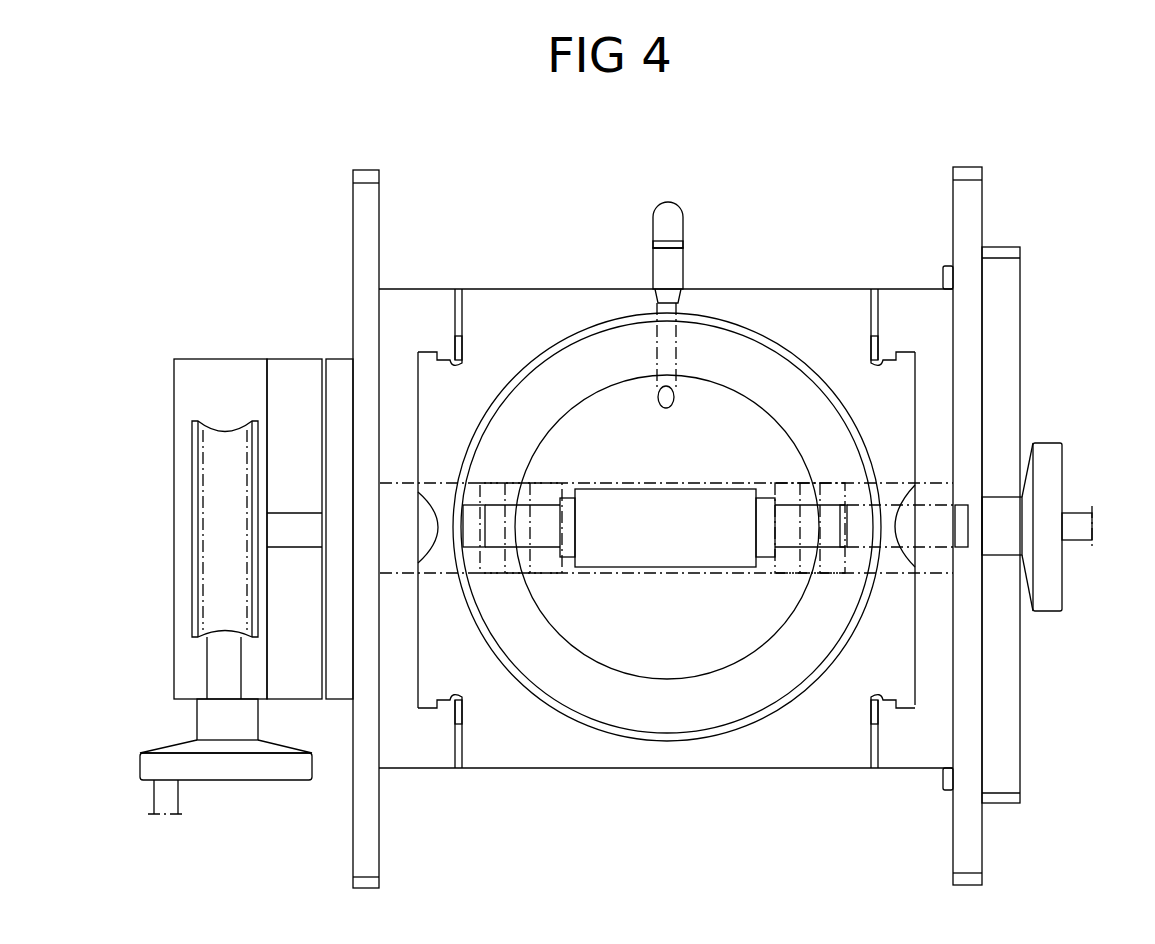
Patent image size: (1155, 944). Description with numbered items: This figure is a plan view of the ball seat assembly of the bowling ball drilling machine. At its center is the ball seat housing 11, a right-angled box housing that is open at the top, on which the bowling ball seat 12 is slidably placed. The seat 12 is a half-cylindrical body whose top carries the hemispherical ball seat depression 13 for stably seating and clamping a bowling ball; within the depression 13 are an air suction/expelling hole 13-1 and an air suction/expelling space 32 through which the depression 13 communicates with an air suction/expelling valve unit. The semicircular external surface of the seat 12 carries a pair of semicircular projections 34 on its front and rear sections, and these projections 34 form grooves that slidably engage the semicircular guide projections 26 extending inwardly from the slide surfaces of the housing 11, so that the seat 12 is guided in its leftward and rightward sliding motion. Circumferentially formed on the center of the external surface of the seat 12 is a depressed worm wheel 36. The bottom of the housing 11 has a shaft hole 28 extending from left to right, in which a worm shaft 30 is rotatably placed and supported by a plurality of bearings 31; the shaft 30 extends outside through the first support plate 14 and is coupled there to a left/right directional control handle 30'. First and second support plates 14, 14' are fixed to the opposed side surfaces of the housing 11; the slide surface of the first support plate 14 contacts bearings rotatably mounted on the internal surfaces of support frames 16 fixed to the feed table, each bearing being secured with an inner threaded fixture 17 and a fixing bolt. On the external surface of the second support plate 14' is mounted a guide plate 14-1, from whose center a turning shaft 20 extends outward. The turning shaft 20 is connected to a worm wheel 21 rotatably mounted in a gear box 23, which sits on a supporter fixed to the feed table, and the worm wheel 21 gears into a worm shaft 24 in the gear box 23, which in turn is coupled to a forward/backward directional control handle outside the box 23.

The first support plate 14 is at (1014, 504).
The second support plate 14' is at (408, 529).
The guide plate 14-1 is at (343, 375).
The support frame 16 is at (1010, 665).
The inner threaded fixture 17 is at (948, 270).
The ball seat housing 11 is at (897, 289).
The bowling ball seat 12 is at (795, 289).
The hemispherical ball seat depression 13 is at (620, 345).
The air suction/expelling hole 13-1 is at (670, 392).
The turning shaft 20 is at (285, 520).
The worm wheel 21 is at (215, 514).
The gear box 23 is at (197, 375).
The worm shaft 24 is at (160, 762).
The semicircular guide projection 26 is at (462, 362).
The shaft hole 28 is at (905, 490).
The worm shaft 30 is at (667, 663).
The left/right directional control handle 30' is at (1065, 485).
The bearing 31 is at (493, 573).
The air suction/expelling space 32 is at (597, 415).
The semicircular projection 34 is at (428, 350).
The depressed worm wheel 36 is at (903, 535).